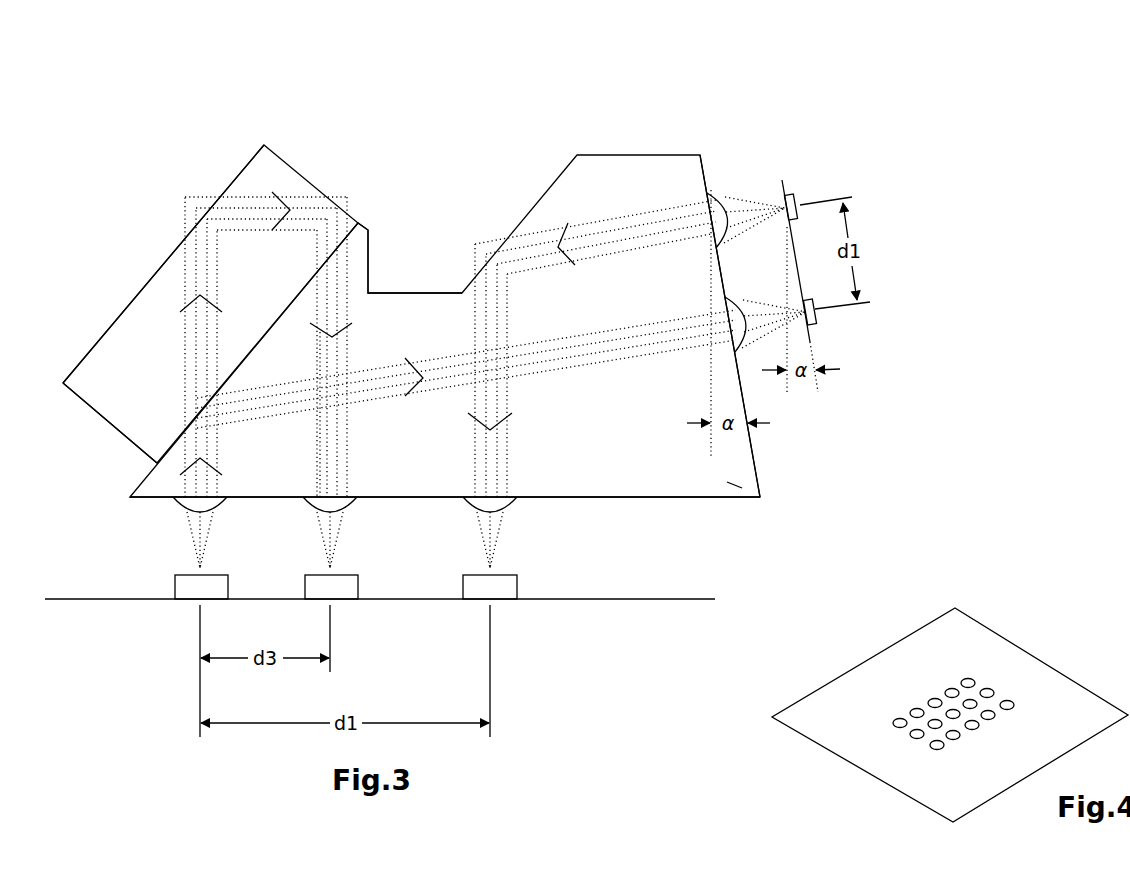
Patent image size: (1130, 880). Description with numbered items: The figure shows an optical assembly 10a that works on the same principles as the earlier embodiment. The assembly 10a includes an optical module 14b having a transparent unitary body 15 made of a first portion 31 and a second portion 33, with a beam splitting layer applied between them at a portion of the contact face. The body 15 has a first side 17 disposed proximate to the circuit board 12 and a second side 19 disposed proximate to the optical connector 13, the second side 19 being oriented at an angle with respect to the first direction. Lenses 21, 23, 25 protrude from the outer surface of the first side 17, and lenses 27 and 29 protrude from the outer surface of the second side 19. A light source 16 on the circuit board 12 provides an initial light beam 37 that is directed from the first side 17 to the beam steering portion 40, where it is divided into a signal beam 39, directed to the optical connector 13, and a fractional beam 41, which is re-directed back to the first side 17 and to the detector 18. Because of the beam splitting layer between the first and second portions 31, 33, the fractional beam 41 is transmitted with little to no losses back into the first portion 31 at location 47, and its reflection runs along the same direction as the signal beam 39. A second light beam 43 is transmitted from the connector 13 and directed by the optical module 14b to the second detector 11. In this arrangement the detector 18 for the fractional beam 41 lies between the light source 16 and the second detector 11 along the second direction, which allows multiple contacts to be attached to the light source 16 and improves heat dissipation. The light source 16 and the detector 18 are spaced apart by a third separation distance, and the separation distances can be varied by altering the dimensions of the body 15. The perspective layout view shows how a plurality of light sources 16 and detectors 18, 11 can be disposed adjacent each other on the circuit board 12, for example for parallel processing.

In FIG. 3, the assembly 10a is at (109, 230).
In FIG. 3, the second detector 11 is at (500, 590).
In FIG. 4, the second detector 11 is at (1010, 704).
In FIG. 3, the circuit board 12 is at (107, 601).
In FIG. 4, the circuit board 12 is at (815, 723).
In FIG. 3, the optical connector 13 is at (810, 333).
In FIG. 3, the optical module 14b is at (318, 166).
In FIG. 3, the transparent unitary body 15 is at (612, 503).
In FIG. 3, the light source 16 is at (188, 590).
In FIG. 4, the light source 16 is at (973, 682).
In FIG. 3, the first side 17 is at (706, 502).
In FIG. 3, the detector 18 is at (343, 590).
In FIG. 4, the detector 18 is at (992, 690).
In FIG. 3, the second side 19 is at (754, 456).
In FIG. 3, the lens 21 is at (185, 505).
In FIG. 3, the lens 23 is at (352, 507).
In FIG. 3, the lens 25 is at (508, 504).
In FIG. 3, the lens 27 is at (733, 305).
In FIG. 3, the lens 29 is at (716, 205).
In FIG. 3, the first portion 31 is at (727, 482).
In FIG. 3, the second portion 33 is at (120, 340).
In FIG. 3, the initial light beam 37 is at (213, 448).
In FIG. 3, the signal beam 39 is at (335, 440).
In FIG. 3, the beam steering portion 40 is at (170, 449).
In FIG. 3, the fractional beam 41 is at (200, 278).
In FIG. 3, the second light beam 43 is at (615, 238).
In FIG. 3, the location 47 is at (316, 284).